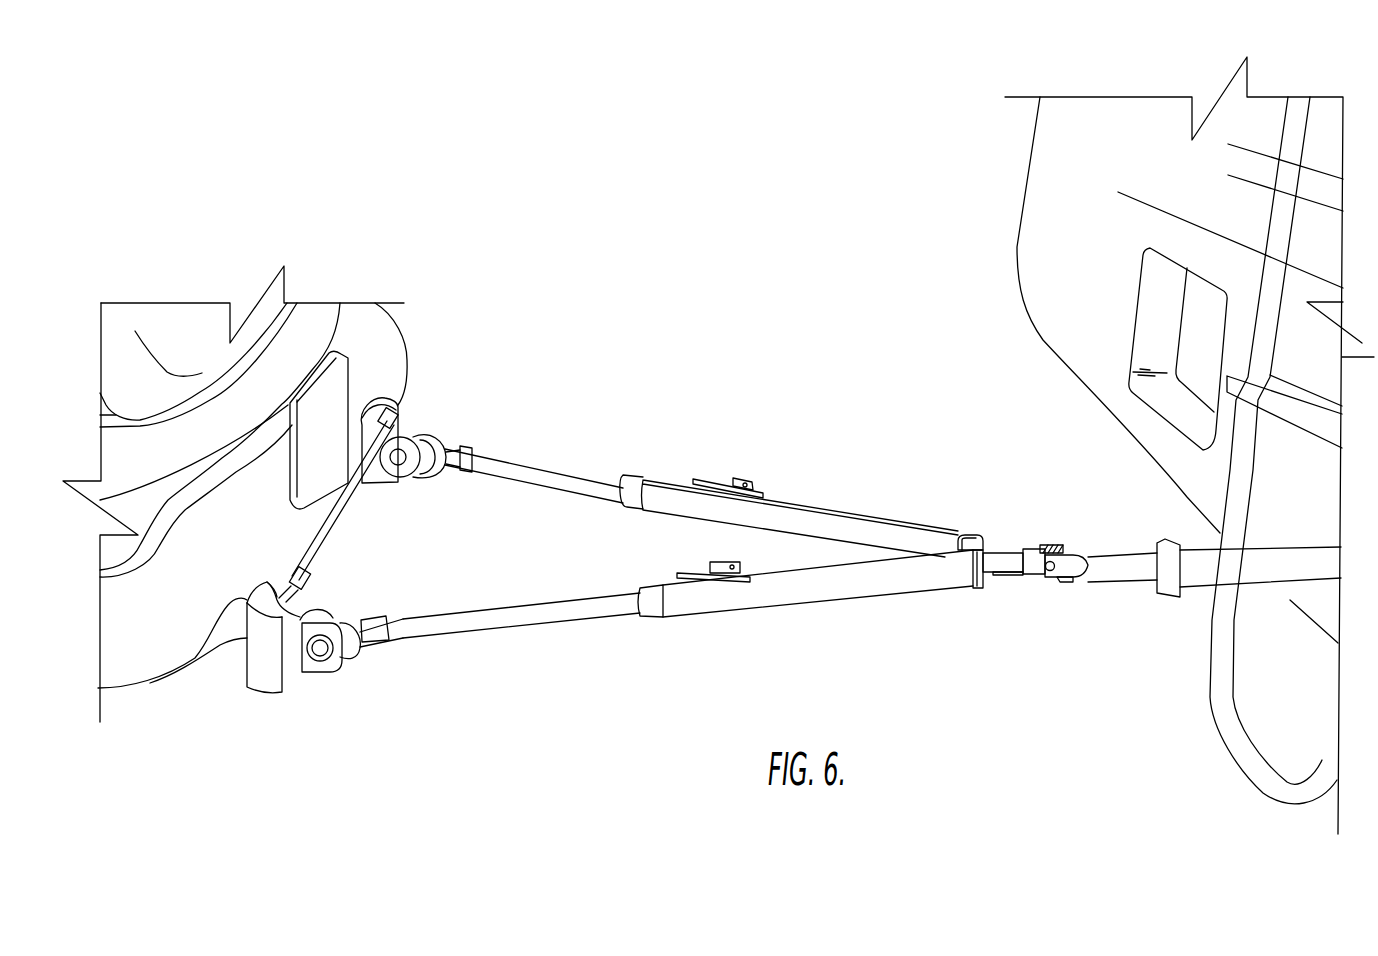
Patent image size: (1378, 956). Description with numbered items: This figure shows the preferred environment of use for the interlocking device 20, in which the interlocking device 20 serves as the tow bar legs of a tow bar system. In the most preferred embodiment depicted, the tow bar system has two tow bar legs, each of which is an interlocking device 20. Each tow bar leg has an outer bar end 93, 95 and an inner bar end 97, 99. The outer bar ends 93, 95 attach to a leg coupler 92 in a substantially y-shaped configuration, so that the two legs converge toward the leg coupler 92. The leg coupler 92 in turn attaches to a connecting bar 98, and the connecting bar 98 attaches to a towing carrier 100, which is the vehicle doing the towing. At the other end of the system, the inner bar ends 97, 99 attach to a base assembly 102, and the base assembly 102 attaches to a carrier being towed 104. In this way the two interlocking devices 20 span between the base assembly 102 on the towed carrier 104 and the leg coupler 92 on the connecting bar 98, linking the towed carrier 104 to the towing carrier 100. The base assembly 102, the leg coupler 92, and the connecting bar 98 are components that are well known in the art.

The interlocking device 20 is at (826, 493).
The leg coupler 92 is at (1003, 557).
The outer bar end 93 is at (977, 515).
The outer bar end 95 is at (969, 600).
The inner bar end 97 is at (467, 437).
The connecting bar 98 is at (1128, 578).
The inner bar end 99 is at (380, 660).
The towing carrier 100 is at (1015, 267).
The base assembly 102 is at (258, 718).
The carrier being towed 104 is at (135, 663).